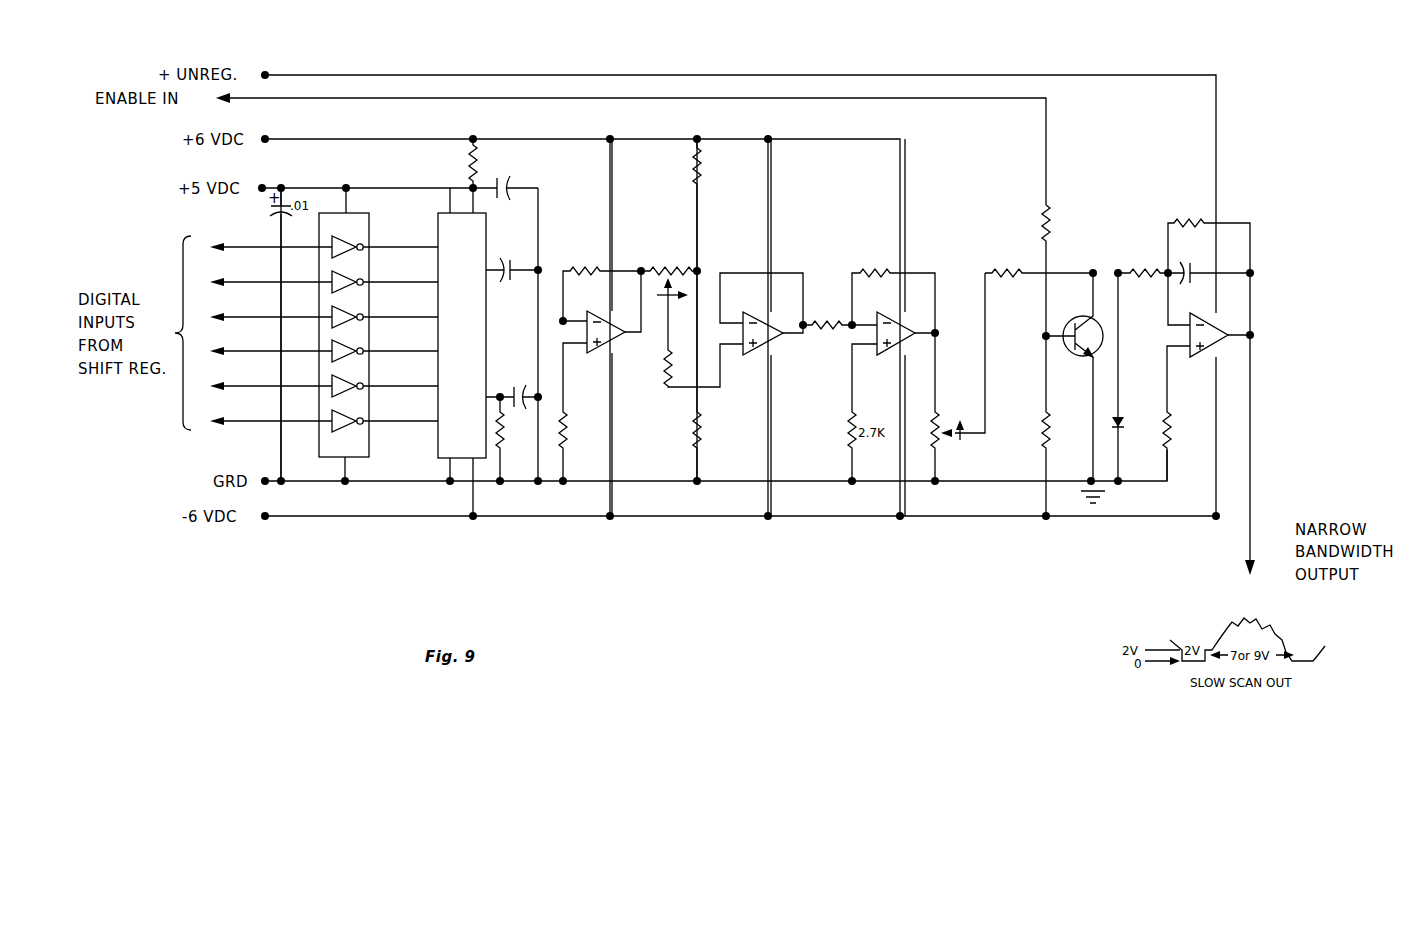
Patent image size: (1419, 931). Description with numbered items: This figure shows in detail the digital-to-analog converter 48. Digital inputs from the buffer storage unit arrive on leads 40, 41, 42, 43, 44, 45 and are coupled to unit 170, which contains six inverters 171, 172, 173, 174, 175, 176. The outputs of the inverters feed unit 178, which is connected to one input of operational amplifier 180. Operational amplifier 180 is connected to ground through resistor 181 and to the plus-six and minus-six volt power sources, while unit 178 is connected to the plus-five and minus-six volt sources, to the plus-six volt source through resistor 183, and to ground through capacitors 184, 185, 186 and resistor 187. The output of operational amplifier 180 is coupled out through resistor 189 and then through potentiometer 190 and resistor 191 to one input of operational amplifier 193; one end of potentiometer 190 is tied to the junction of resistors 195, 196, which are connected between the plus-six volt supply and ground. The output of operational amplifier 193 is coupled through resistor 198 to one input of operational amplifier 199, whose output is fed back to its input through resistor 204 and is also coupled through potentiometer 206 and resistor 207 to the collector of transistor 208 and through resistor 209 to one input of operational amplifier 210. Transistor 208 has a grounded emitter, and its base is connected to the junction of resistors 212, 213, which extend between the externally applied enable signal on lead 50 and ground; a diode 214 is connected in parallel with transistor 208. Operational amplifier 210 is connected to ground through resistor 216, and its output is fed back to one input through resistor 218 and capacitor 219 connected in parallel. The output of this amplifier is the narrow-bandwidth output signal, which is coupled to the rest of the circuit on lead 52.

The lead 40 is at (245, 246).
The lead 41 is at (245, 281).
The lead 42 is at (245, 316).
The lead 43 is at (245, 350).
The lead 44 is at (245, 385).
The lead 45 is at (245, 420).
The digital-to-analog converter 48 is at (420, 44).
The lead 50 is at (346, 95).
The lead 52 is at (1254, 465).
The unit 170 is at (372, 208).
The inverter 171 is at (356, 238).
The inverter 172 is at (356, 273).
The inverter 173 is at (356, 308).
The inverter 174 is at (356, 342).
The inverter 175 is at (356, 377).
The inverter 176 is at (356, 412).
The unit 178 is at (488, 352).
The operational amplifier 180 is at (596, 318).
The resistor 181 is at (565, 424).
The resistor 183 is at (470, 158).
The capacitor 184 is at (500, 176).
The capacitor 185 is at (510, 284).
The capacitor 186 is at (518, 405).
The resistor 187 is at (500, 445).
The resistor 189 is at (571, 258).
The potentiometer 190 is at (690, 266).
The resistor 191 is at (666, 378).
The operational amplifier 193 is at (778, 341).
The resistor 195 is at (690, 168).
The resistor 196 is at (690, 429).
The resistor 198 is at (810, 310).
The operational amplifier 199 is at (888, 350).
The resistor 204 is at (880, 280).
The potentiometer 206 is at (940, 418).
The resistor 207 is at (1020, 280).
The transistor 208 is at (1073, 356).
The resistor 209 is at (1149, 280).
The operational amplifier 210 is at (1200, 318).
The resistor 212 is at (1052, 210).
The resistor 213 is at (1048, 445).
The diode 214 is at (1130, 420).
The resistor 216 is at (1170, 444).
The resistor 218 is at (1172, 222).
The capacitor 219 is at (1197, 262).